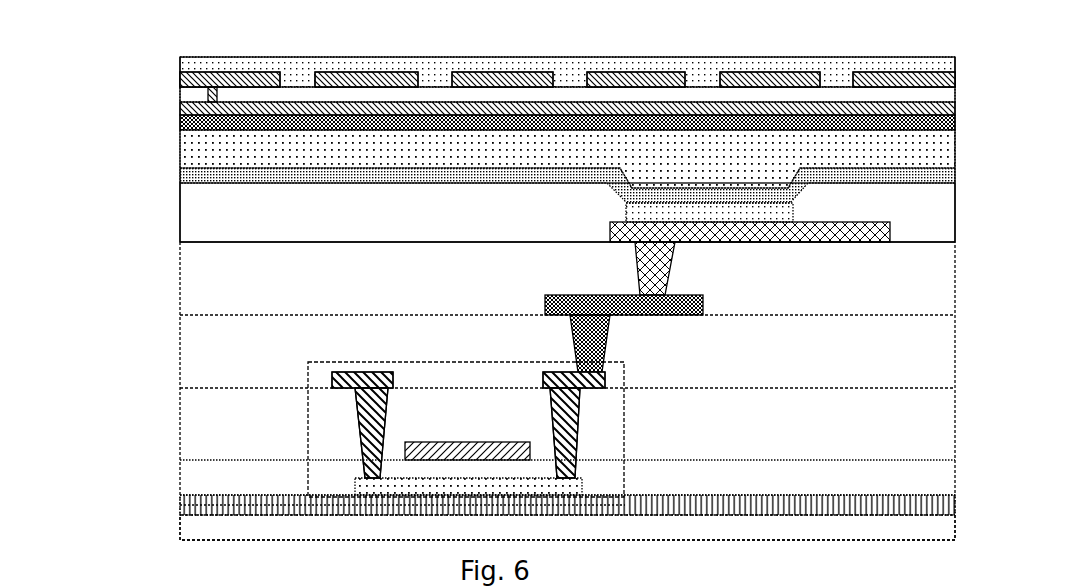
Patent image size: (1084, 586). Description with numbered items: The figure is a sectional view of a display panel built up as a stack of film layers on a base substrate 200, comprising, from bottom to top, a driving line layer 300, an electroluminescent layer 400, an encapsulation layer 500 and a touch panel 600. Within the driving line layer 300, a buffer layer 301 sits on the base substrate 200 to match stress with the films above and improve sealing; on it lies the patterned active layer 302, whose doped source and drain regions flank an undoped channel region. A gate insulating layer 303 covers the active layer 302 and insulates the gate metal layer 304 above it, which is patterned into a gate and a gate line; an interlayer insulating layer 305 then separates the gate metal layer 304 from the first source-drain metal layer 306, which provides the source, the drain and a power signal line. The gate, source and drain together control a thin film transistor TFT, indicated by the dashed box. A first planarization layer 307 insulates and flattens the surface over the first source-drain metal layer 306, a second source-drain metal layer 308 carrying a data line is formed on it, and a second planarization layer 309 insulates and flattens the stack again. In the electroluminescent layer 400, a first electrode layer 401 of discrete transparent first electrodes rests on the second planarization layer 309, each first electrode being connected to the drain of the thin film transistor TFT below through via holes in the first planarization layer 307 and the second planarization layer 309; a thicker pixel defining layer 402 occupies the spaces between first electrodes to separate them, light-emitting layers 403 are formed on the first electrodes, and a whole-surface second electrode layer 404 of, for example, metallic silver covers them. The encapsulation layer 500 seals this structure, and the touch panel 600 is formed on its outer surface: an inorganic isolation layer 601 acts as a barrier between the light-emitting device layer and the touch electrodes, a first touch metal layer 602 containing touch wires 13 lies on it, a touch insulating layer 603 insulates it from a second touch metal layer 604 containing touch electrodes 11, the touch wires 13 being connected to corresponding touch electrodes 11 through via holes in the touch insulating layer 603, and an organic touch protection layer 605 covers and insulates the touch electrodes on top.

The touch electrodes 11 is at (367, 78).
The touch wires 13 is at (438, 102).
The base substrate 200 is at (203, 527).
The driving line layer 300 is at (107, 275).
The buffer layer 301 is at (185, 505).
The active layer 302 is at (357, 486).
The gate insulating layer 303 is at (200, 485).
The gate metal layer 304 is at (481, 452).
The interlayer insulating layer 305 is at (200, 428).
The first source-drain metal layer 306 is at (370, 377).
The first planarization layer 307 is at (207, 355).
The second source-drain metal layer 308 is at (547, 297).
The second planarization layer 309 is at (207, 275).
The thin film transistor TFT is at (625, 438).
The electroluminescent layer 400 is at (107, 176).
The first electrode layer 401 is at (738, 238).
The pixel defining layer 402 is at (205, 218).
The light-emitting layers 403 is at (775, 210).
The second electrode layer 404 is at (200, 175).
The encapsulation layer 500 is at (200, 145).
The touch panel 600 is at (107, 18).
The isolation layer 601 is at (200, 122).
The first touch metal layer 602 is at (197, 108).
The touch insulating layer 603 is at (200, 97).
The second touch metal layer 604 is at (192, 82).
The touch protection layer 605 is at (193, 62).